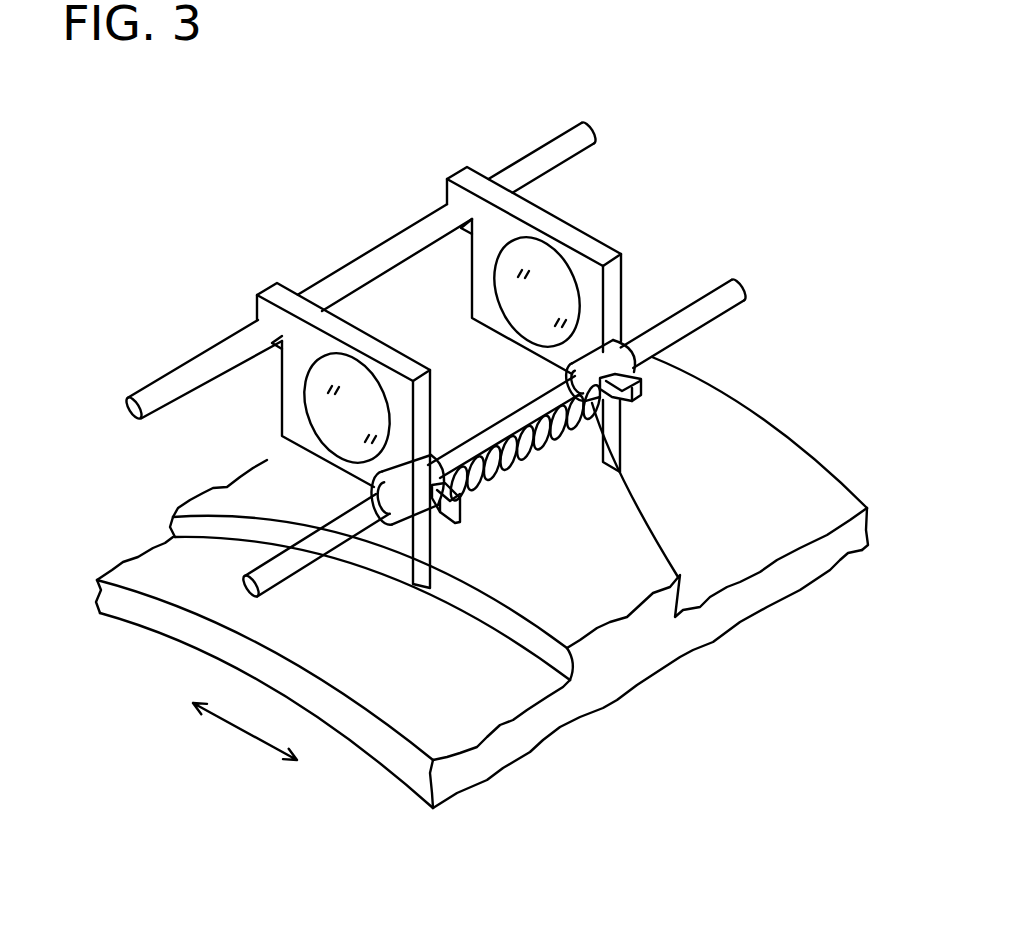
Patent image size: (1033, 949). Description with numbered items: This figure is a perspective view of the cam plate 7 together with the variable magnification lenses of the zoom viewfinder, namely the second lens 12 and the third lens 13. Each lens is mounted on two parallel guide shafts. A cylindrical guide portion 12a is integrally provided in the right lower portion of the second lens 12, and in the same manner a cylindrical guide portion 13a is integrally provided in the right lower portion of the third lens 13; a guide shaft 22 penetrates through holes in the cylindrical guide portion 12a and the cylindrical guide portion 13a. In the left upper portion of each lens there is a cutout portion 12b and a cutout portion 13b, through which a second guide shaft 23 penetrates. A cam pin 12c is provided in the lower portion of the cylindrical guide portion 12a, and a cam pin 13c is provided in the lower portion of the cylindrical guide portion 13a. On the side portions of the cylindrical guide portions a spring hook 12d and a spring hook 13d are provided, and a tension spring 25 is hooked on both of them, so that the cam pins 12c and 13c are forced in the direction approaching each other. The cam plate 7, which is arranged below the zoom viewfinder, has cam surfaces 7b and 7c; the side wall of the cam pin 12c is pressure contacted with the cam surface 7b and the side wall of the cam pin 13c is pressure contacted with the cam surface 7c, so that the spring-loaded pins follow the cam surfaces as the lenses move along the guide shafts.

The cam plate 7 is at (752, 412).
The cam surface 7b is at (468, 597).
The cam surface 7c is at (637, 503).
The second lens 12 is at (348, 319).
The cylindrical guide portion 12a is at (373, 478).
The cutout portion 12b is at (232, 333).
The cam pin 12c is at (408, 555).
The spring hook 12d is at (450, 524).
The third lens 13 is at (563, 218).
The cylindrical guide portion 13a is at (588, 350).
The cutout portion 13b is at (435, 207).
The cam pin 13c is at (622, 443).
The spring hook 13d is at (638, 405).
The guide shaft 22 is at (480, 428).
The guide shaft 23 is at (343, 272).
The tension spring 25 is at (513, 460).